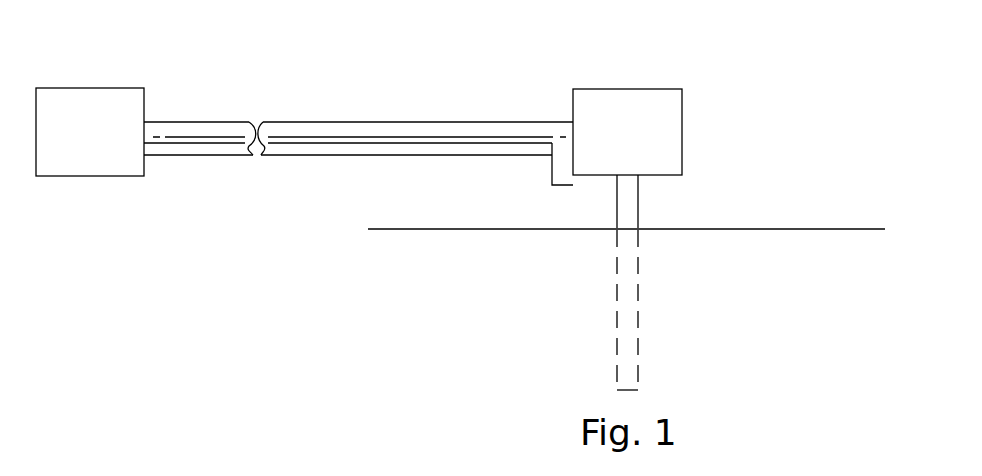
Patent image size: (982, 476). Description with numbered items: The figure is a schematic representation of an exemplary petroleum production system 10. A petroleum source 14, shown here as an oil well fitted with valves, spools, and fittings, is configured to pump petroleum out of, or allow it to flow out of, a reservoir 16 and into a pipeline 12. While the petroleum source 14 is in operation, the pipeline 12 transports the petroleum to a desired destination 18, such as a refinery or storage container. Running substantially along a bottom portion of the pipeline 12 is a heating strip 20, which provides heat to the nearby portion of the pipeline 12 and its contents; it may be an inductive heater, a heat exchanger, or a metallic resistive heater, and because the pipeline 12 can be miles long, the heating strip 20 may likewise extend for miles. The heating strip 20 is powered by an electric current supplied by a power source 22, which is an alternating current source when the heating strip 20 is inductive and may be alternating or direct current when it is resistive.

The petroleum production system 10 is at (508, 57).
The pipeline 12 is at (357, 130).
The petroleum source 14 is at (643, 146).
The reservoir 16 is at (768, 237).
The destination 18 is at (106, 144).
The heating strip 20 is at (358, 149).
The power source 22 is at (560, 172).